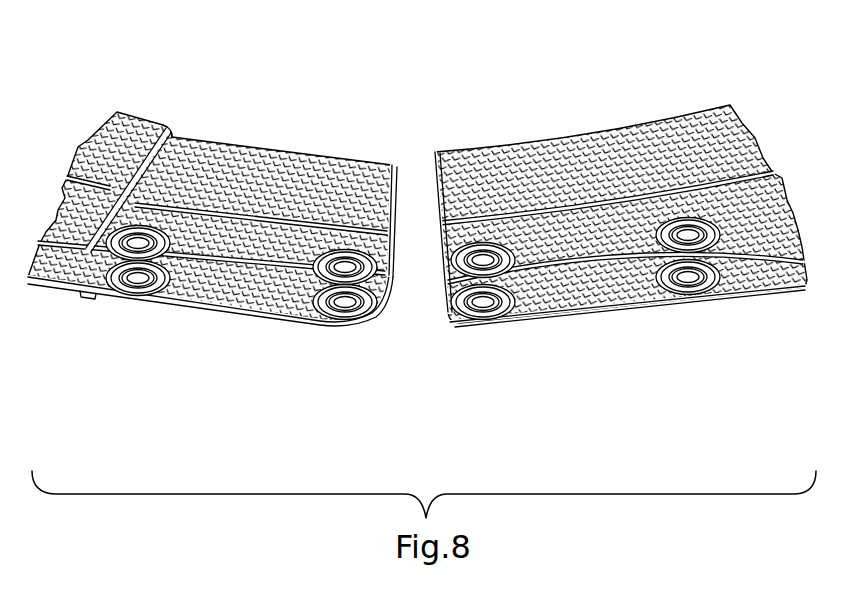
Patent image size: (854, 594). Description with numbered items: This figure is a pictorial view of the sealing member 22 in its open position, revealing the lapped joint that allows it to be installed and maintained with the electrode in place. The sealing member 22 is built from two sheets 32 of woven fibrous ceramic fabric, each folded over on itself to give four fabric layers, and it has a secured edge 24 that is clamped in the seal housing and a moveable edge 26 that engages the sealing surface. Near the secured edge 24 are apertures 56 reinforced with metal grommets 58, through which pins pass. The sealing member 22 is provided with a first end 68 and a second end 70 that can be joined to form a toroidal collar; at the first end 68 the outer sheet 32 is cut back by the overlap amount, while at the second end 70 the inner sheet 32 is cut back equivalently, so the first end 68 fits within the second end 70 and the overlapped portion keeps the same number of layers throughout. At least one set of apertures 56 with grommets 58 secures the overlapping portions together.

The sealing member 22 is at (610, 320).
The secured edge 24 is at (60, 290).
The moveable edge 26 is at (283, 157).
The sheet 32 is at (82, 140).
The aperture 56 is at (138, 240).
The grommet 58 is at (452, 267).
The first end 68 is at (397, 167).
The second end 70 is at (427, 155).